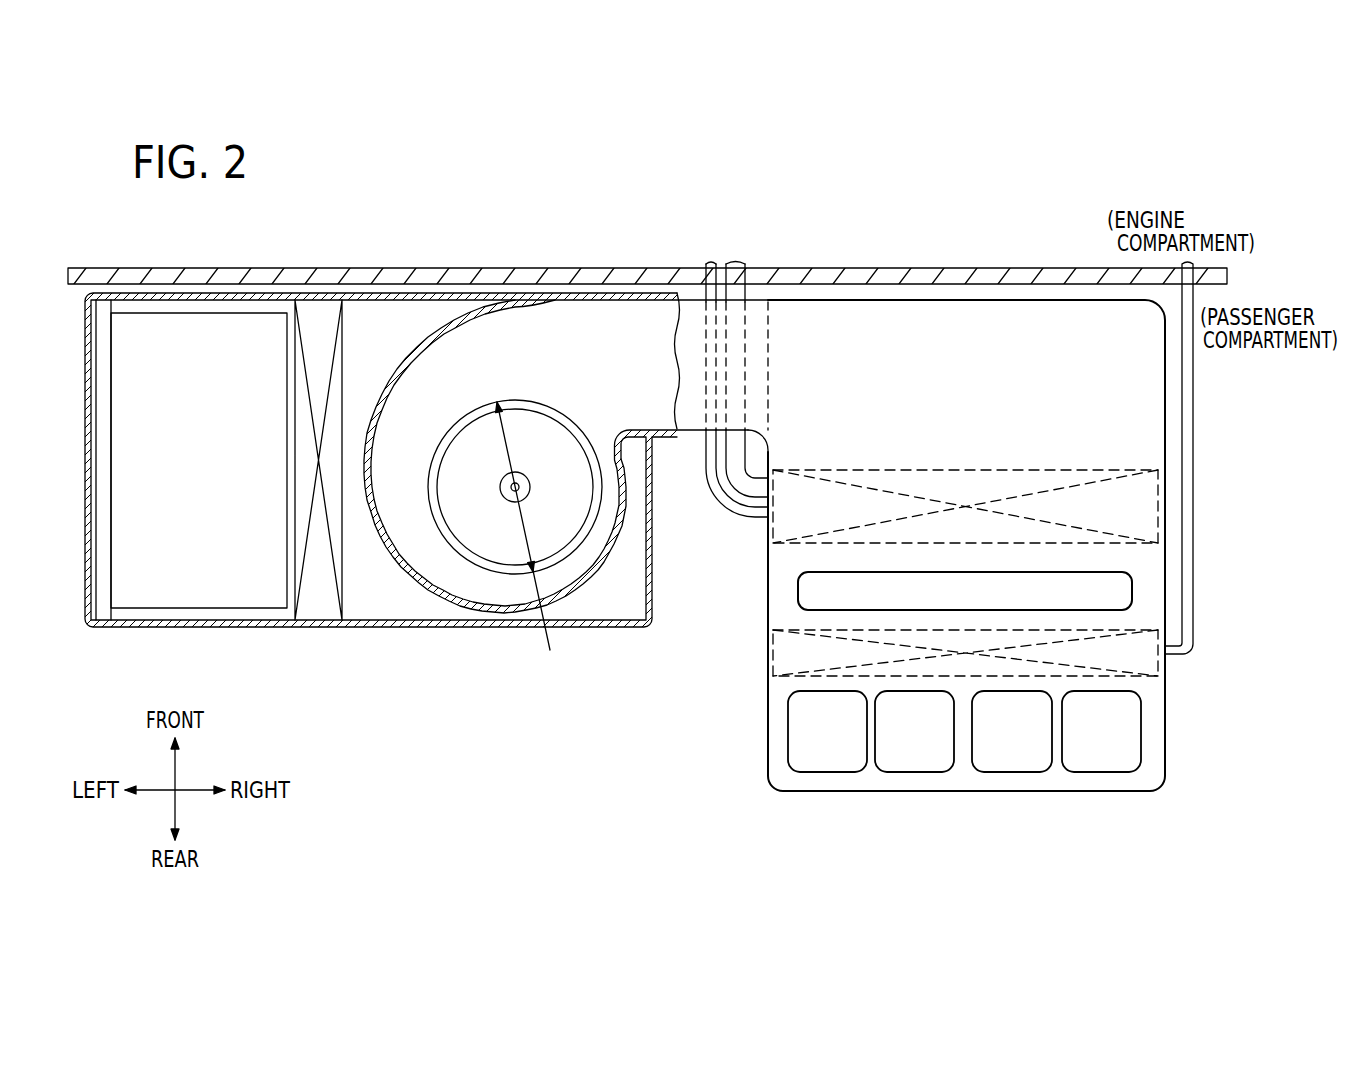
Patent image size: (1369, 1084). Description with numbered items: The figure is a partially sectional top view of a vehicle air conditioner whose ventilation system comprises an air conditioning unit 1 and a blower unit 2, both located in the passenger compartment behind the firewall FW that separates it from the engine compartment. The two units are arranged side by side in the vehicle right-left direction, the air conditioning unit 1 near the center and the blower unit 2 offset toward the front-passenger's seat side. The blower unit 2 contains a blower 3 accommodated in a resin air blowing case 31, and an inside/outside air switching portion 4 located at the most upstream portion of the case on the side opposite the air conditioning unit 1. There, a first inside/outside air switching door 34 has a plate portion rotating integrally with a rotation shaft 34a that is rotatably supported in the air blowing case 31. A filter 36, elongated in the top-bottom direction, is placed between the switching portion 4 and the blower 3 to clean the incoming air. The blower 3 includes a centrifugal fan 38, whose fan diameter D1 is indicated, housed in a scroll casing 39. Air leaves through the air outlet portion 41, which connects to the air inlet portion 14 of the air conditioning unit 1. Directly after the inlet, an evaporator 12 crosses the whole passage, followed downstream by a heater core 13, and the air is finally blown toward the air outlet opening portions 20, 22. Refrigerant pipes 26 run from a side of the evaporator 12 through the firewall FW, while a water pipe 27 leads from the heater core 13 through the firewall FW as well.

The air conditioning unit 1 is at (966, 805).
The blower unit 2 is at (446, 686).
The blower 3 is at (556, 461).
The inside/outside air switching portion 4 is at (212, 510).
The evaporator 12 is at (1142, 511).
The heater core 13 is at (795, 663).
The air inlet portion 14 is at (1052, 345).
The air outlet opening portion 20 is at (812, 590).
The air outlet opening portion 22 is at (905, 757).
The refrigerant pipes 26 is at (718, 496).
The water pipe 27 is at (1188, 658).
The air blowing case 31 is at (399, 628).
The first inside/outside air switching door 34 is at (197, 590).
The rotation shaft 34a is at (103, 608).
The filter 36 is at (315, 597).
The centrifugal fan 38 is at (483, 532).
The scroll casing 39 is at (450, 355).
The air outlet portion 41 is at (757, 355).
The fan diameter D1 is at (601, 596).
The firewall FW is at (963, 268).